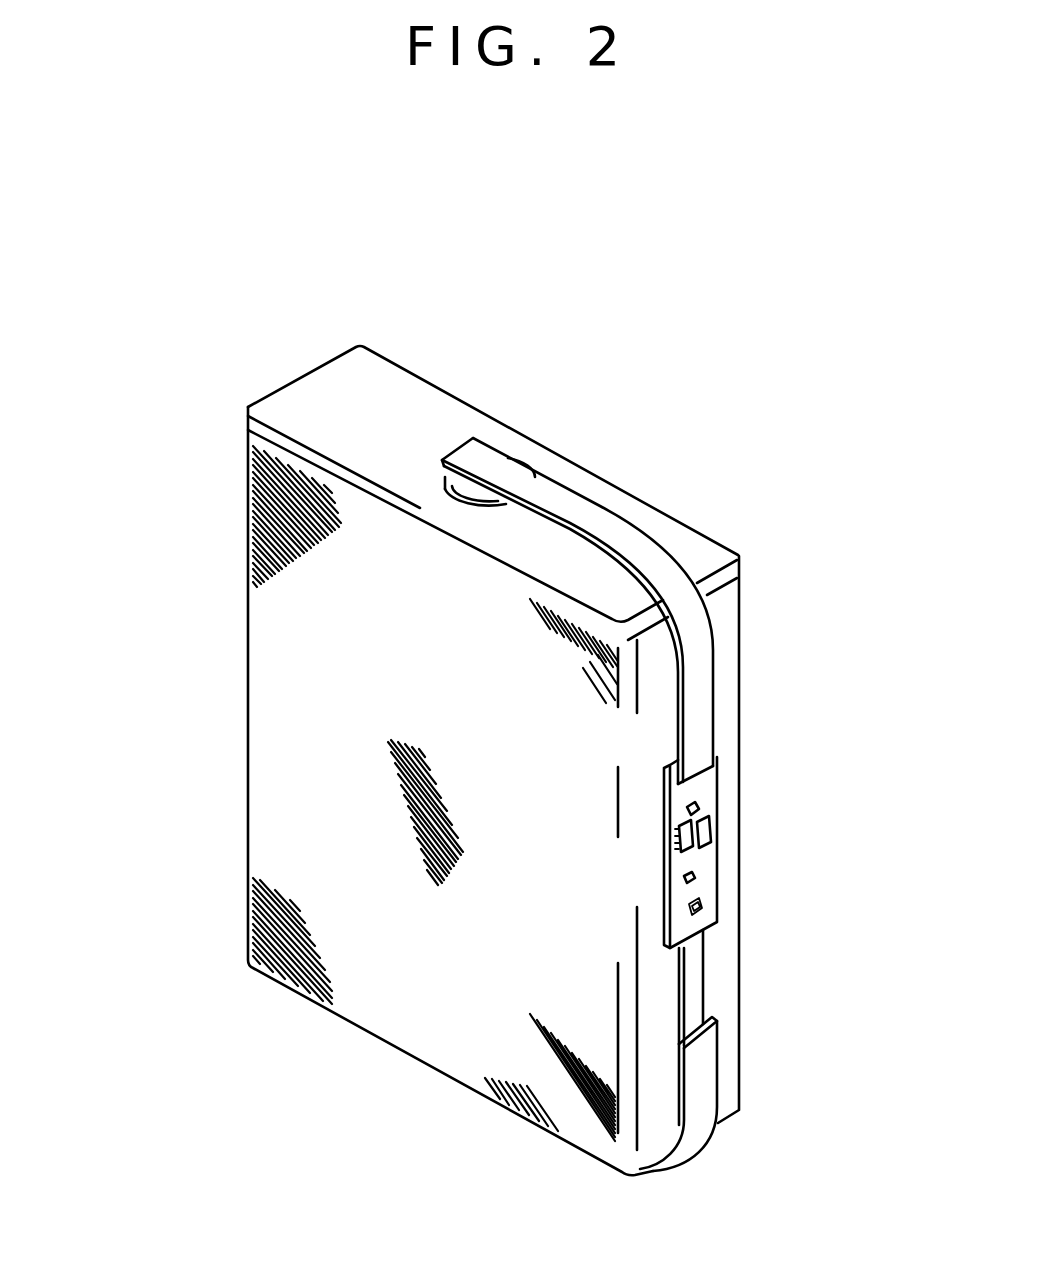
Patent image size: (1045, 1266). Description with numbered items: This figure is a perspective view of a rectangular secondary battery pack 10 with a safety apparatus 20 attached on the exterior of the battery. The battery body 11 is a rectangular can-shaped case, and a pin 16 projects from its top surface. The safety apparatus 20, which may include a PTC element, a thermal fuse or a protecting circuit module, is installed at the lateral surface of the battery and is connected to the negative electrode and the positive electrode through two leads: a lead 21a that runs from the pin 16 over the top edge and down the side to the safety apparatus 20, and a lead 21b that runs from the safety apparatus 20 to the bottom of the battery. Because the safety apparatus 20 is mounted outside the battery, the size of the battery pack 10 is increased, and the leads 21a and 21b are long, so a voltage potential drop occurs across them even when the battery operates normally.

The battery pack 10 is at (188, 435).
The can 11 is at (273, 760).
The pin 16 is at (515, 458).
The safety apparatus 20 is at (765, 848).
The lead 21a is at (698, 697).
The lead 21b is at (707, 1075).